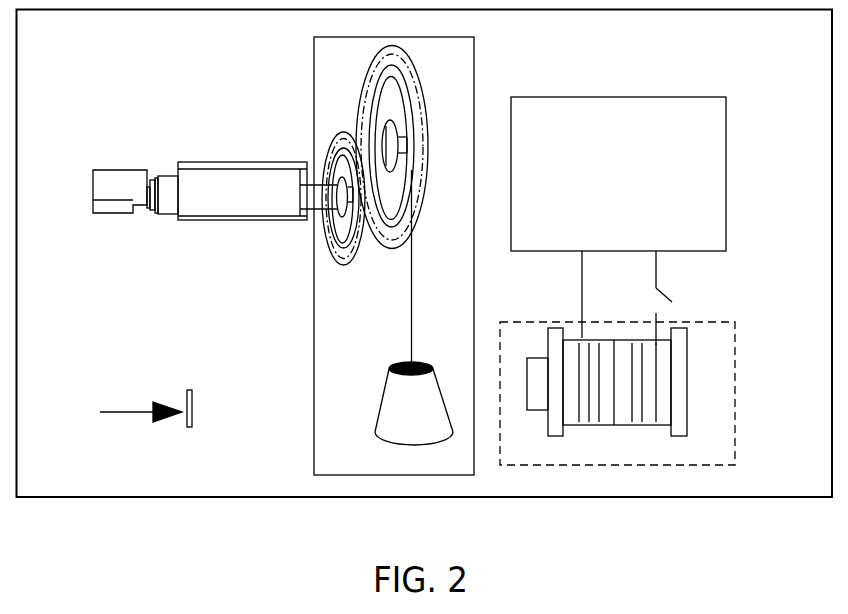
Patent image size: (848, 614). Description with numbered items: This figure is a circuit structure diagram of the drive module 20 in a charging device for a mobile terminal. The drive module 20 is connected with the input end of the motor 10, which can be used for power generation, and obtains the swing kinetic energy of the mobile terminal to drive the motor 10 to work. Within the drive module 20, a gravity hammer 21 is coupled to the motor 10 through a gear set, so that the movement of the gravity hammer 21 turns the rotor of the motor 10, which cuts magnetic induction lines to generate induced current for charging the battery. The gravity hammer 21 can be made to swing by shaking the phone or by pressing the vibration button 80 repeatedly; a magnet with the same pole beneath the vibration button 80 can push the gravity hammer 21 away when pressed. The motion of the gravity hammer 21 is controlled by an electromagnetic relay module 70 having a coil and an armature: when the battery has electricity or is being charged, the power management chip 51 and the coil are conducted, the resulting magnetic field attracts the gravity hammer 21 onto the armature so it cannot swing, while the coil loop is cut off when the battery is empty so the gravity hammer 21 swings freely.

The motor 10 is at (210, 162).
The drive module 20 is at (432, 100).
The gravity hammer 21 is at (378, 420).
The power management chip 51 is at (728, 102).
The electromagnetic relay module 70 is at (735, 317).
The vibration button 80 is at (189, 390).